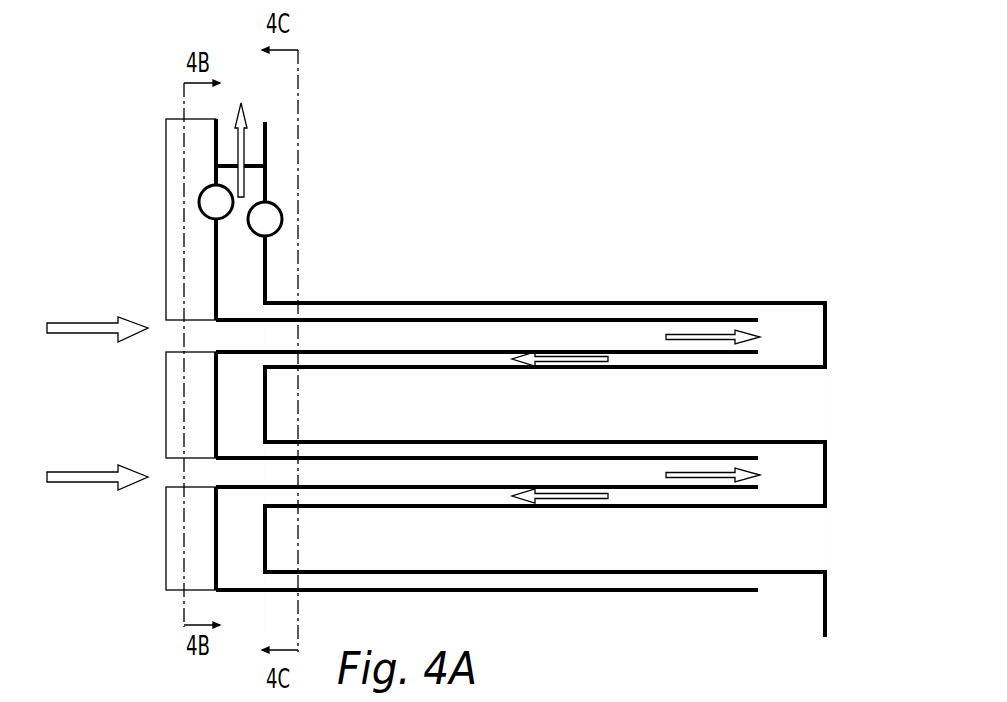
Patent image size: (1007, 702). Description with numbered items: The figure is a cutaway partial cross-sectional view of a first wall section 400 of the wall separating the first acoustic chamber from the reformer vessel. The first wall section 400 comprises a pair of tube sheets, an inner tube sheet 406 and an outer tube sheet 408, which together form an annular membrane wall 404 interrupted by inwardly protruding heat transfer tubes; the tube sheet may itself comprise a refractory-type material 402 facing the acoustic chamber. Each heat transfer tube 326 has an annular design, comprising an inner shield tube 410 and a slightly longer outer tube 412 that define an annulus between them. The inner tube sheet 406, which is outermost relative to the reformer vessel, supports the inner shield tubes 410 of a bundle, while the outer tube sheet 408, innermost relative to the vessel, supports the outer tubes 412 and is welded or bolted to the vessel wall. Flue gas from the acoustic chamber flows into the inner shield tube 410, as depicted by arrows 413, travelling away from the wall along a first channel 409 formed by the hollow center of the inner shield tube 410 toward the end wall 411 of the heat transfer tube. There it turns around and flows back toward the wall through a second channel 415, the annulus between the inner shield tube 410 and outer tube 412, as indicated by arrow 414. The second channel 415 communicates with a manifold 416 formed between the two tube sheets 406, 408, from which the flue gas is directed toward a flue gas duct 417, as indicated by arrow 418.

The first wall section 400 is at (71, 31).
The refractory-type material 402 is at (175, 222).
The annular membrane wall 404 is at (208, 553).
The inner tube sheet 406 is at (212, 413).
The outer tube sheet 408 is at (268, 409).
The first channel 409 is at (400, 337).
The inner shield tube 410 is at (660, 321).
The end wall 411 is at (822, 317).
The outer tube 412 is at (755, 303).
The arrows 413 is at (78, 335).
The arrow 414 is at (762, 337).
The second channel 415 is at (475, 312).
The manifold 416 is at (250, 267).
The flue gas duct 417 is at (255, 180).
The arrow 418 is at (278, 104).
The heat transfer tube 326 is at (577, 291).